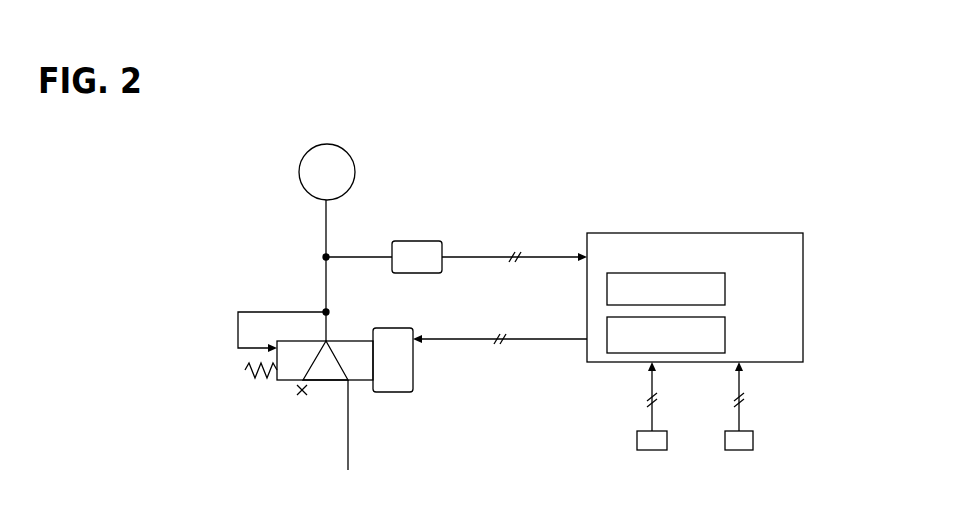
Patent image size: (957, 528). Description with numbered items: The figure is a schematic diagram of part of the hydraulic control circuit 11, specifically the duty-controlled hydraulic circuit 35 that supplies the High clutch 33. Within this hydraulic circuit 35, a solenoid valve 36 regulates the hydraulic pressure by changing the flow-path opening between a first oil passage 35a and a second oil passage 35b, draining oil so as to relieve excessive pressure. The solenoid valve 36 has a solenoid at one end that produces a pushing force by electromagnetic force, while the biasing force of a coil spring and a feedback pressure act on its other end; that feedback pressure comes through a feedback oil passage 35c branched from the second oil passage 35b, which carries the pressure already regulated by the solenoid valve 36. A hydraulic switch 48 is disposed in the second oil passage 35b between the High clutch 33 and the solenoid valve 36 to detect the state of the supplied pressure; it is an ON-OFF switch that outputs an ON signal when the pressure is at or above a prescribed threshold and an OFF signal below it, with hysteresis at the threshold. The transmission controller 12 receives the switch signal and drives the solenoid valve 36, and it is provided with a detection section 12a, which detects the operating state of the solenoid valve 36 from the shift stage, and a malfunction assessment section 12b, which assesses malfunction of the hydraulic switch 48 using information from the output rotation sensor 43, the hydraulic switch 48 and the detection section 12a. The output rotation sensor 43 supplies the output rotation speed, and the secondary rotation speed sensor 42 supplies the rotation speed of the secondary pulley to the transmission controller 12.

The hydraulic control circuit 11 is at (214, 244).
The transmission controller 12 is at (718, 271).
The detection section 12a is at (726, 288).
The malfunction assessment section 12b is at (726, 333).
The High clutch 33 is at (298, 171).
The hydraulic circuit 35 is at (272, 405).
The first oil passage 35a is at (348, 424).
The second oil passage 35b is at (323, 228).
The feedback oil passage 35c is at (283, 312).
The solenoid valve 36 is at (403, 405).
The secondary rotation speed sensor 42 is at (740, 452).
The output rotation sensor 43 is at (652, 452).
The hydraulic switch 48 is at (418, 241).